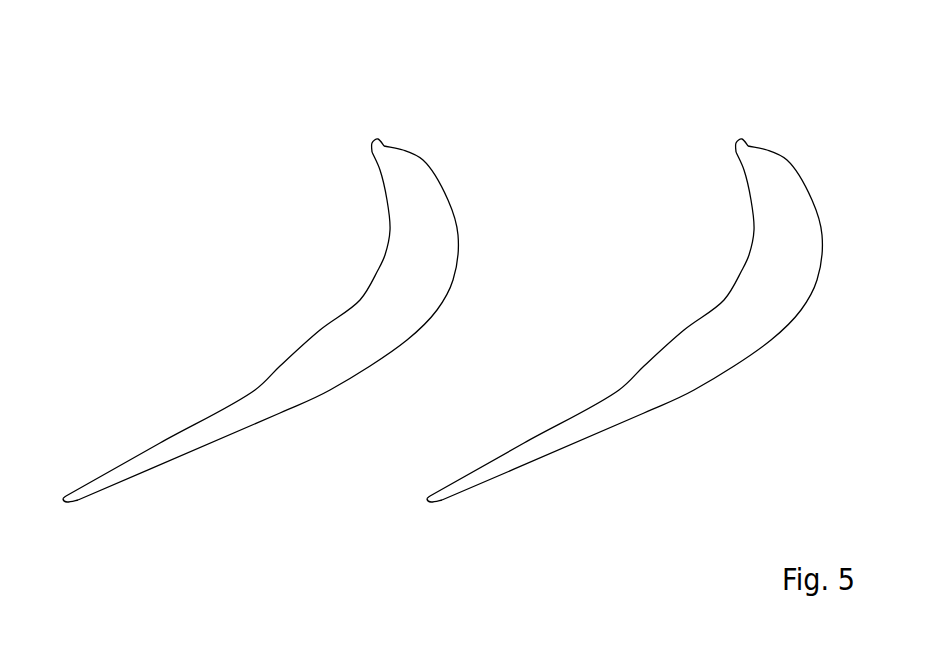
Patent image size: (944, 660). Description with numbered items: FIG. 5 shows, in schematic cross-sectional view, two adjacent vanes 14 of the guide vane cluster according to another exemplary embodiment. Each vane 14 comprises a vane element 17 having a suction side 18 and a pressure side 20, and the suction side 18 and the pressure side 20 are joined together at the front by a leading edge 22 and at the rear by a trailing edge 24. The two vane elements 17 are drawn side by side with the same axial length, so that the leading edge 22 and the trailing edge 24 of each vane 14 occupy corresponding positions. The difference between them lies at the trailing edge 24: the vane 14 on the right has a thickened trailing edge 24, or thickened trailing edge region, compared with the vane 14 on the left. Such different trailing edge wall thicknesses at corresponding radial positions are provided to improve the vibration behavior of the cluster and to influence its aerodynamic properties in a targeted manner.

The vane 14 is at (445, 305).
The vane element 17 is at (417, 297).
The suction side 18 is at (341, 403).
The pressure side 20 is at (273, 283).
The leading edge 22 is at (385, 150).
The trailing edge 24 is at (73, 498).